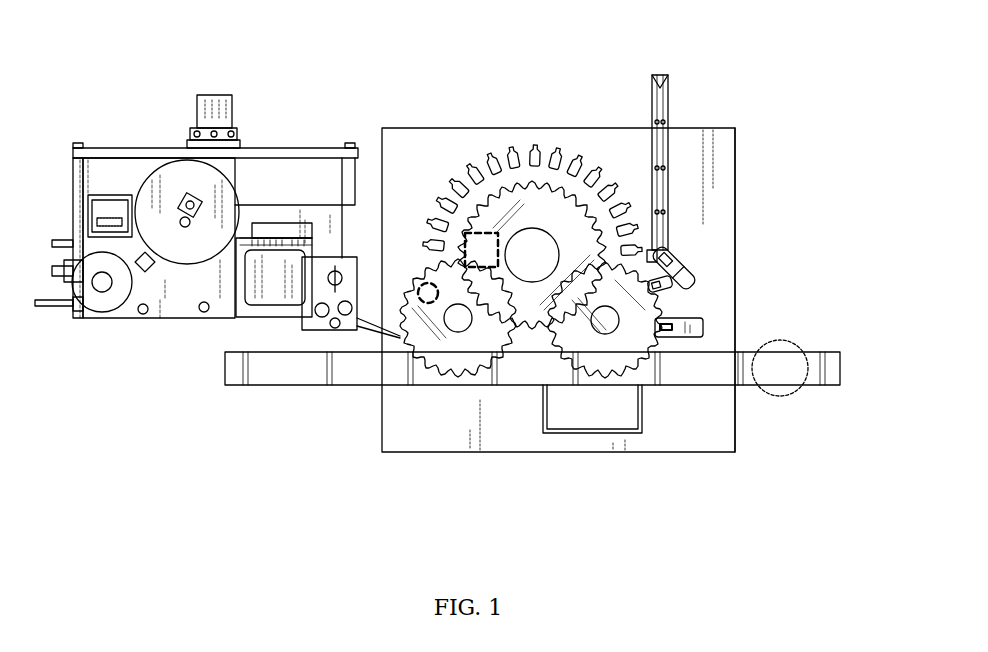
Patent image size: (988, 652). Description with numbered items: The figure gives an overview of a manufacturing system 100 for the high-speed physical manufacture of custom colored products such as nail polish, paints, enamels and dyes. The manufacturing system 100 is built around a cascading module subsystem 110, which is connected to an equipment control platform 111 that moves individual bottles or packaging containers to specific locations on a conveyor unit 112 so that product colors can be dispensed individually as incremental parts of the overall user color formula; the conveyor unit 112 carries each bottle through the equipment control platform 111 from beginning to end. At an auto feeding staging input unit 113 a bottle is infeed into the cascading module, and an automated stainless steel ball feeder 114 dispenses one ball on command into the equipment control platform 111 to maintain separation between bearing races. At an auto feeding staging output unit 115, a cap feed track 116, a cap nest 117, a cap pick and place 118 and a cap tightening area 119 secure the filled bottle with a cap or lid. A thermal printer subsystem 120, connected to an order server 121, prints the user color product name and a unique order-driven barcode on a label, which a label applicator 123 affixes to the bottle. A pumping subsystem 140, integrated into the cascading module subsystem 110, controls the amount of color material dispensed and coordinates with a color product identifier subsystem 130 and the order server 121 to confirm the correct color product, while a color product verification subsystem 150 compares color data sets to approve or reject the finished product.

The manufacturing system 100 is at (748, 52).
The cascading module subsystem 110 is at (522, 185).
The equipment control platform 111 is at (695, 152).
The conveyor unit 112 is at (250, 363).
The auto feeding staging input unit 113 is at (393, 355).
The automated stainless steel ball feeder 114 is at (424, 284).
The auto feeding staging output unit 115 is at (658, 364).
The cap feed track 116 is at (655, 86).
The cap nest 117 is at (670, 250).
The cap pick and place 118 is at (690, 276).
The cap tightening area 119 is at (690, 320).
The thermal printer subsystem 120 is at (217, 244).
The order server 121 is at (207, 108).
The label applicator 123 is at (348, 326).
The color product identifier subsystem 130 is at (268, 225).
The pumping subsystem 140 is at (470, 233).
The color product verification subsystem 150 is at (792, 375).